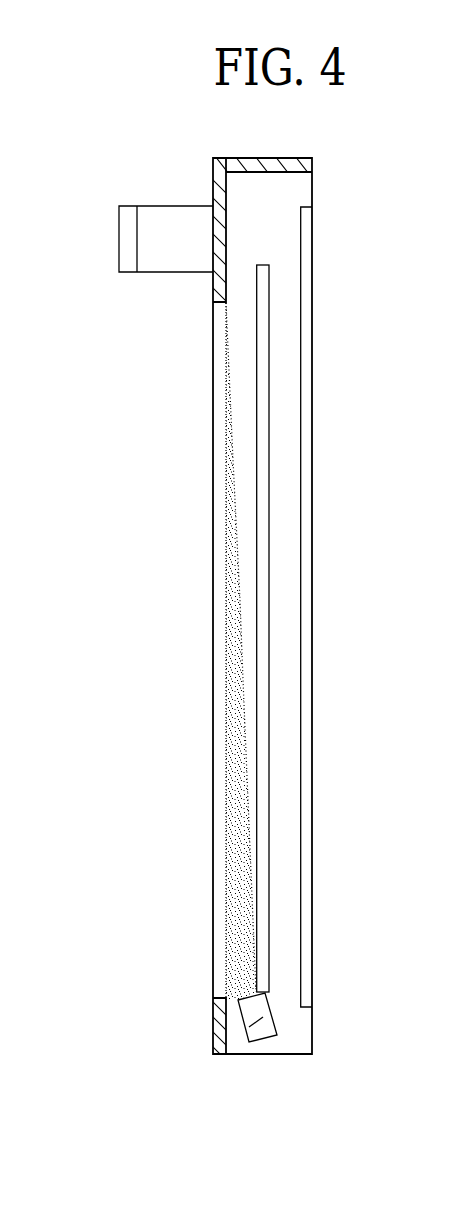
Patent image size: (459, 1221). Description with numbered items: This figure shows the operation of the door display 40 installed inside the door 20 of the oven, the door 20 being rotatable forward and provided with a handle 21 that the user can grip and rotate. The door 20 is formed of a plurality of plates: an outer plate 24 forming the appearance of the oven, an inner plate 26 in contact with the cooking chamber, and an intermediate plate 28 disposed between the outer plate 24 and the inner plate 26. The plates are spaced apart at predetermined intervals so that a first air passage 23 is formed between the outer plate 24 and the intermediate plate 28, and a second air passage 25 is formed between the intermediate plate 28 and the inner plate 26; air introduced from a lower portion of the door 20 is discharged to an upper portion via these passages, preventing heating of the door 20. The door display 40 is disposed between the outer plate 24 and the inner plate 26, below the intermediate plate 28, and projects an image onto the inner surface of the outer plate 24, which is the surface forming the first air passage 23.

The housing / cooking container 20 is at (325, 188).
The connector / inlet port 21 is at (129, 241).
The inner wall boundary 23 is at (239, 373).
The particulate / filler material 24 is at (218, 643).
The gap / passage 25 is at (283, 406).
The outer partition plate 26 is at (306, 617).
The inner partition plate 28 is at (263, 535).
The sensor / block member 40 is at (247, 1028).